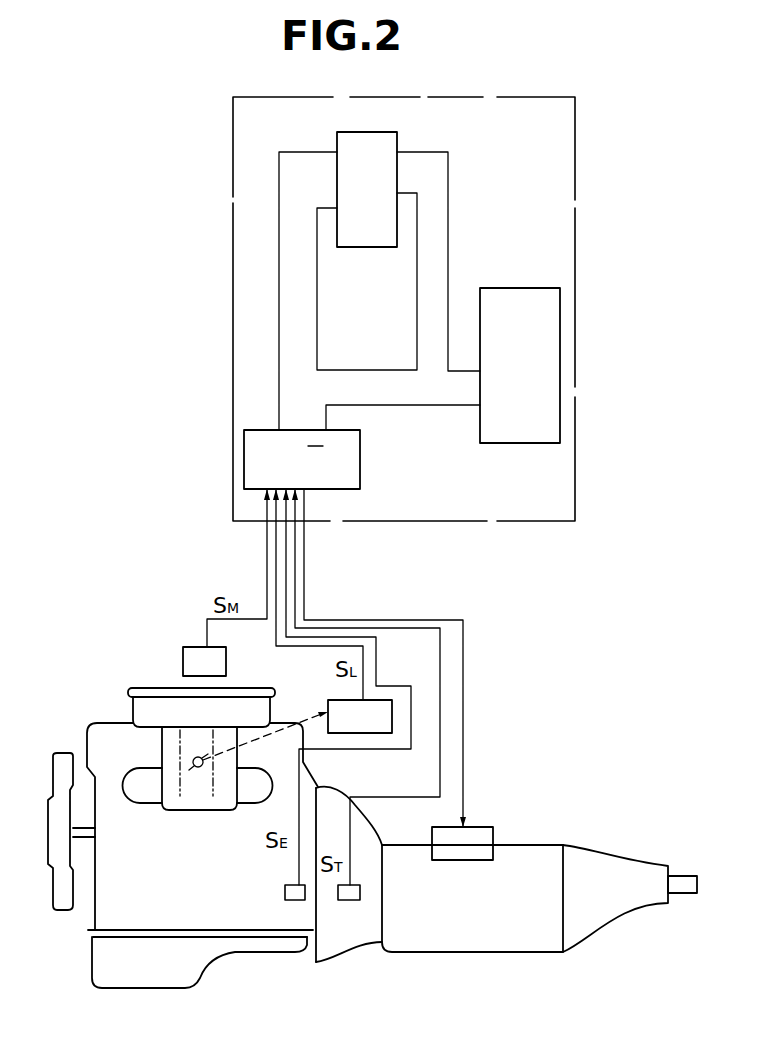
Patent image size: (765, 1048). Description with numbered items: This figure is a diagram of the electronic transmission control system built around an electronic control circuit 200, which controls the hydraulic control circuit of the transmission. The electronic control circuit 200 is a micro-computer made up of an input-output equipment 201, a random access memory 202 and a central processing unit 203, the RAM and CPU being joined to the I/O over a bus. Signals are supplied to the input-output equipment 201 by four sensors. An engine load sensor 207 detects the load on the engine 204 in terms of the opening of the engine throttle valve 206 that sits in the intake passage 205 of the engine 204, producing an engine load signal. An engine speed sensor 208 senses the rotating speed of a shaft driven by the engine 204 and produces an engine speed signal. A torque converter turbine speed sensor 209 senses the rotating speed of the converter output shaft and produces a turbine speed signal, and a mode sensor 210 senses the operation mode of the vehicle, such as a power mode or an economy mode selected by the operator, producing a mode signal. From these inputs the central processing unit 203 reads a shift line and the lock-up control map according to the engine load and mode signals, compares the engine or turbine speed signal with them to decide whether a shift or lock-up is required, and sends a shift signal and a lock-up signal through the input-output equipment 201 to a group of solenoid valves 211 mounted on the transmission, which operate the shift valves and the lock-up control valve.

The electronic control circuit 200 is at (424, 97).
The input-output equipment (I/O) 201 is at (355, 460).
The random access memory (RAM) 202 is at (392, 147).
The central processing unit (CPU) 203 is at (515, 293).
The engine 204 is at (95, 728).
The intake passage 205 is at (177, 792).
The engine throttle valve 206 is at (192, 761).
The engine load sensor 207 is at (348, 703).
The engine speed sensor 208 is at (285, 891).
The torque converter turbine speed sensor 209 is at (350, 900).
The mode sensor 210 is at (226, 666).
The group of solenoid valves 211 is at (480, 842).